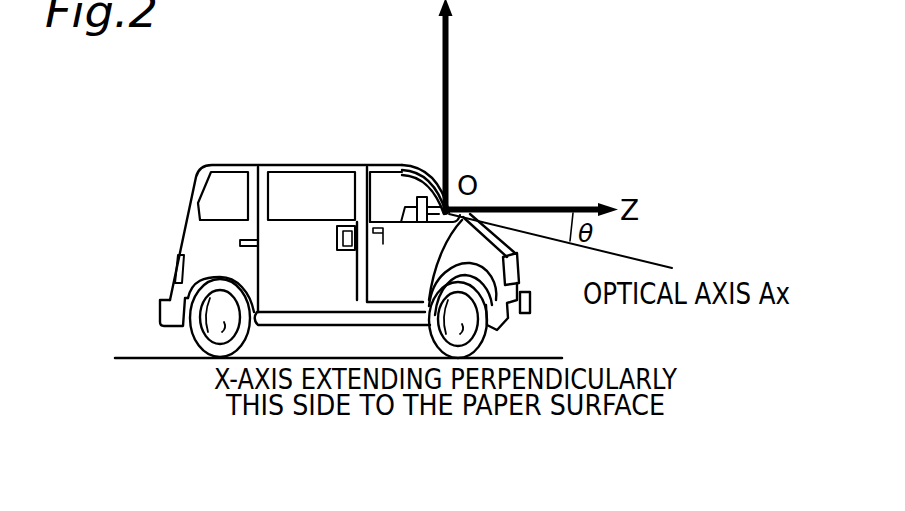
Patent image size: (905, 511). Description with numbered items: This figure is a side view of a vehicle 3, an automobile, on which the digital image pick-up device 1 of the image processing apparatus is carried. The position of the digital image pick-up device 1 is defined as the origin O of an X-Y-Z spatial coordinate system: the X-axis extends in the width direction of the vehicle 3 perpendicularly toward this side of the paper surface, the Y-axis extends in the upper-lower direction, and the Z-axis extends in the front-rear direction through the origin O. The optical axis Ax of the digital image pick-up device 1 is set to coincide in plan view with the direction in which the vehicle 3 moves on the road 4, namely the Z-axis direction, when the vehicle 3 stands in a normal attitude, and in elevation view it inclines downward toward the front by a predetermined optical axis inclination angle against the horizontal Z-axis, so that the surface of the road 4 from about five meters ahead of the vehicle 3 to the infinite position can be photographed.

The digital image pick-up device 1 is at (391, 166).
The vehicle 3 is at (237, 167).
The road 4 is at (147, 357).